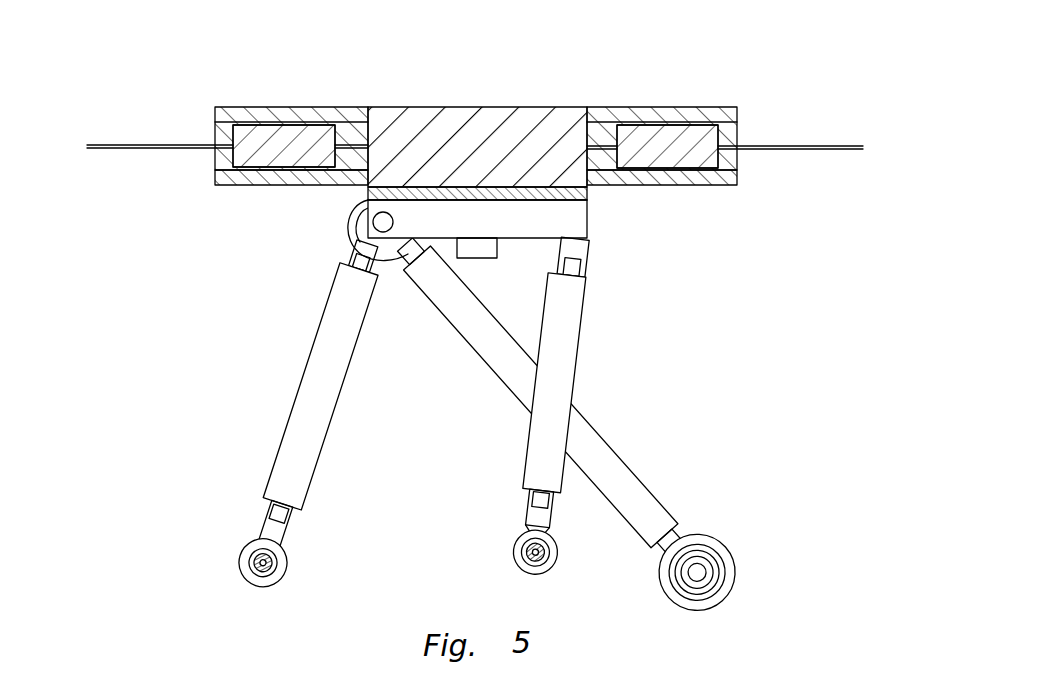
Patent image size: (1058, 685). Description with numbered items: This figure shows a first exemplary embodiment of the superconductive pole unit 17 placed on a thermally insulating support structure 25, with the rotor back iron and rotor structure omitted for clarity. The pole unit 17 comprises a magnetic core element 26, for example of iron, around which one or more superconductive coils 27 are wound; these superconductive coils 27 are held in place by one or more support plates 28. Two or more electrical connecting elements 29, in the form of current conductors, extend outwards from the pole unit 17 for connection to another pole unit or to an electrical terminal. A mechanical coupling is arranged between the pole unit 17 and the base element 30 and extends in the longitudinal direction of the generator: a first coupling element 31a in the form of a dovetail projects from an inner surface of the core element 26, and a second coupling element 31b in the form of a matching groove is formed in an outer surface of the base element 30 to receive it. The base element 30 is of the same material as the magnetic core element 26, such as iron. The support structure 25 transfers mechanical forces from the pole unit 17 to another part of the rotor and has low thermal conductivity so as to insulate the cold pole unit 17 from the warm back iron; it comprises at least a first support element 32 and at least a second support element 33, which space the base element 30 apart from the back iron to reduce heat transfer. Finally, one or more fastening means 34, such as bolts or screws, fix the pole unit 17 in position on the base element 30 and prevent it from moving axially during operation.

The superconductive pole unit 17 is at (465, 133).
The thermally insulating support structure 25 is at (505, 413).
The magnetic core element 26 is at (445, 113).
The superconductive coils 27 is at (268, 152).
The support plates 28 is at (217, 178).
The electrical connecting elements 29 is at (117, 147).
The base element 30 is at (570, 218).
The first coupling element 31a is at (495, 183).
The second coupling element 31b is at (484, 200).
The first support element 32 is at (628, 483).
The second support element 33 is at (542, 440).
The fastening means 34 is at (478, 252).